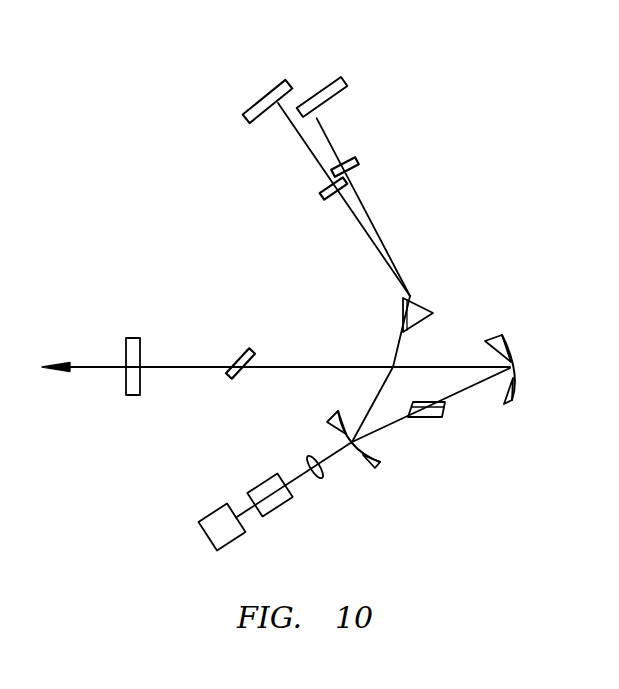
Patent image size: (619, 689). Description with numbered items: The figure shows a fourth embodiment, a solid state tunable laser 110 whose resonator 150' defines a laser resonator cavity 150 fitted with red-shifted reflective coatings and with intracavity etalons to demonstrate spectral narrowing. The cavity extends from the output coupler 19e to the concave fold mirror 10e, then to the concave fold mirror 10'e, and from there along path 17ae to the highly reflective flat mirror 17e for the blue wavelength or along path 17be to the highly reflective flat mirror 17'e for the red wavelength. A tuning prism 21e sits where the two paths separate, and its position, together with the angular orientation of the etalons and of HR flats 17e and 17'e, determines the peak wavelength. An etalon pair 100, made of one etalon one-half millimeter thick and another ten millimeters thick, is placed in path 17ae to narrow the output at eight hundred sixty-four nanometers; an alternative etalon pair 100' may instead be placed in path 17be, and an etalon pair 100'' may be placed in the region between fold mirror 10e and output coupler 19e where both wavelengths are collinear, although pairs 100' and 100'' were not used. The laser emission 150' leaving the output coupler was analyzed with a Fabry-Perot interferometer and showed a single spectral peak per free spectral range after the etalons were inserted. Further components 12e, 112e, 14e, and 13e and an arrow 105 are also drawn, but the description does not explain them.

The highly reflective mirror 17e is at (255, 100).
The highly reflective mirror 17'e is at (317, 77).
The etalon pair 100 is at (298, 202).
The etalon pair 100' is at (370, 152).
The etalon pair 100'' is at (270, 345).
The path 17ae is at (370, 238).
The path 17be is at (375, 230).
The tuning prism 21e is at (428, 309).
The laser resonator cavity 150 is at (124, 193).
The laser emission 150' is at (276, 303).
The output coupler 19e is at (132, 338).
The concave fold mirror 10e is at (520, 378).
The beam path direction 105 is at (258, 407).
The lens 14e is at (307, 458).
The filter plate 13e is at (422, 417).
The light source 12e is at (213, 511).
The optical element 112e is at (277, 515).
The concave fold mirror 10'e is at (361, 460).
The solid state tunable laser 110 is at (410, 500).